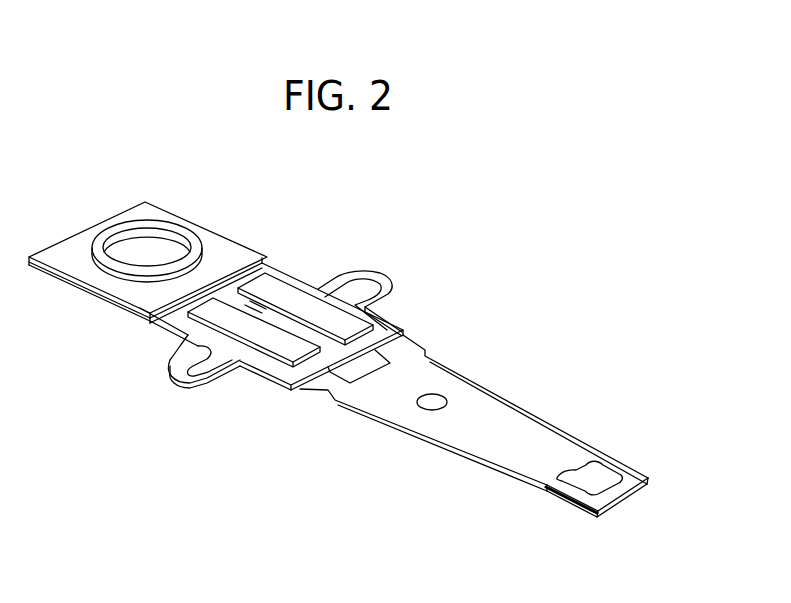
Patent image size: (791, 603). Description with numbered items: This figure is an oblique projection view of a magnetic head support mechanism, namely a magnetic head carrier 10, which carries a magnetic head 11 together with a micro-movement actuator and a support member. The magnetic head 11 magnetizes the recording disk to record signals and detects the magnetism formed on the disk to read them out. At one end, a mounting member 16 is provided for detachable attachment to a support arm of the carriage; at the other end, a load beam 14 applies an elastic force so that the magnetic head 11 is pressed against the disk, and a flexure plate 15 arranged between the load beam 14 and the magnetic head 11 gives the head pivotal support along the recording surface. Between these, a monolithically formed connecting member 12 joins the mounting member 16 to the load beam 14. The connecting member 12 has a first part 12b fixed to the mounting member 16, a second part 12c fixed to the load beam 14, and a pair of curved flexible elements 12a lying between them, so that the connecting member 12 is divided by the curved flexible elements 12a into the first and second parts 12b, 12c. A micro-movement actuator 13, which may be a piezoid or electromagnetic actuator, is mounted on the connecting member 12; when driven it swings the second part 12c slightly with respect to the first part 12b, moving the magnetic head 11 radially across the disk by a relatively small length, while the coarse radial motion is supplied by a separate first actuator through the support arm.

The magnetic head carrier 10 is at (266, 233).
The magnetic head 11 is at (585, 516).
The connecting member 12 is at (305, 281).
The curved flexible elements 12a is at (180, 374).
The first part 12b is at (172, 319).
The second part 12c is at (278, 376).
The micro-movement actuator 13 is at (352, 283).
The load beam 14 is at (502, 403).
The flexure plate 15 is at (567, 497).
The mounting member 16 is at (121, 289).